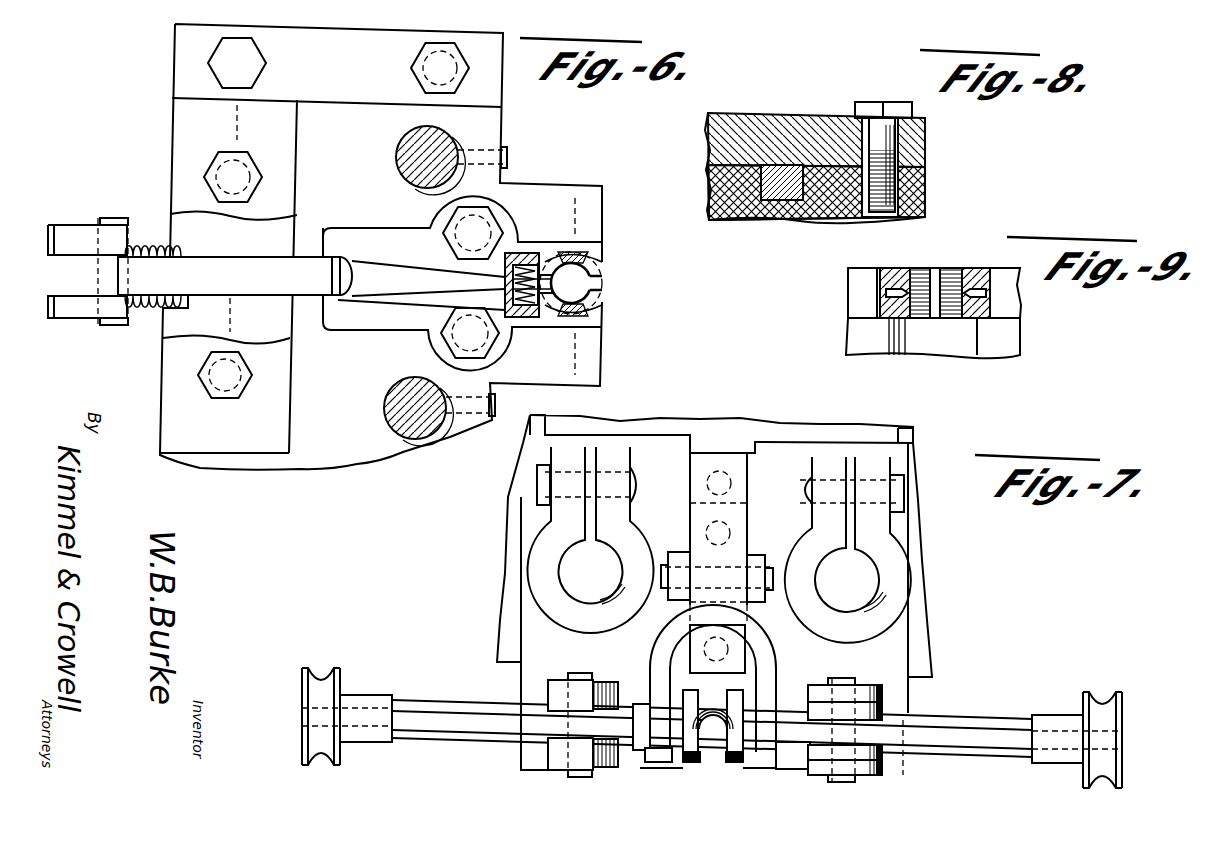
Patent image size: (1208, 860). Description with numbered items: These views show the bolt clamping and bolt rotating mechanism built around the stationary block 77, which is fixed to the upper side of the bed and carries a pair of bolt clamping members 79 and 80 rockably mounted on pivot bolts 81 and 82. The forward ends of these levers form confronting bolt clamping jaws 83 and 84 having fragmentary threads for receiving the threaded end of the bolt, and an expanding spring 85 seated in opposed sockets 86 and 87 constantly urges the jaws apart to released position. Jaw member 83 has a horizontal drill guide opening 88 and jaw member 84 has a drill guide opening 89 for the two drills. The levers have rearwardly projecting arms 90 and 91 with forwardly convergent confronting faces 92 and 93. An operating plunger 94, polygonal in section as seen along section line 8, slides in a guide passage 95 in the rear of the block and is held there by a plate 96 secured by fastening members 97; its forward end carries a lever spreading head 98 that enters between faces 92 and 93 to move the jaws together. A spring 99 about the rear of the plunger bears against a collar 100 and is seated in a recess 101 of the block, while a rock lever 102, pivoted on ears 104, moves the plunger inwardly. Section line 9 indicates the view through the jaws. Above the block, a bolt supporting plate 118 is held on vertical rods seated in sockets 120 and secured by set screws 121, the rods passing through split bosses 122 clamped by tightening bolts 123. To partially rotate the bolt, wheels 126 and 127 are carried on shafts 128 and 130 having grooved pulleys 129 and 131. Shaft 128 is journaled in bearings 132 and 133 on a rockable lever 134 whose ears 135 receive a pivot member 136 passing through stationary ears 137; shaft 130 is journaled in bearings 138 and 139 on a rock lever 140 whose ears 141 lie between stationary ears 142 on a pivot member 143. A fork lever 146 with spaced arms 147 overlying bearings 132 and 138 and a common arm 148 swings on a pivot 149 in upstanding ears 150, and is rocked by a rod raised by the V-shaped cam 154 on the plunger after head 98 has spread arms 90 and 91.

In FIG. 6, the section line 8— 8 is at (246, 218).
In FIG. 6, the section line 9— 9 is at (608, 286).
In FIG. 6, the stationary block 77 is at (551, 194).
In FIG. 6, the bolt clamping member 79 is at (499, 229).
In FIG. 6, the bolt clamping member 80 is at (557, 356).
In FIG. 6, the pivot bolt 81 is at (507, 190).
In FIG. 6, the pivot bolt 82 is at (411, 361).
In FIG. 6, the bolt clamping jaw 83 is at (602, 281).
In FIG. 9, the bolt clamping jaw 83 is at (985, 242).
In FIG. 6, the bolt clamping jaw 84 is at (607, 291).
In FIG. 9, the bolt clamping jaw 84 is at (910, 247).
In FIG. 6, the expanding spring 85 is at (421, 282).
In FIG. 6, the socket 86 is at (535, 269).
In FIG. 6, the socket 87 is at (541, 315).
In FIG. 9, the drill guide opening 88 is at (965, 329).
In FIG. 9, the drill guide opening 89 is at (884, 327).
In FIG. 6, the rearwardly projecting arm 90 is at (462, 246).
In FIG. 6, the rearwardly projecting arm 91 is at (462, 299).
In FIG. 6, the convergent face 92 is at (409, 252).
In FIG. 6, the convergent face 93 is at (451, 330).
In FIG. 6, the operating plunger 94 is at (381, 247).
In FIG. 8, the operating plunger 94 is at (786, 215).
In FIG. 8, the guide passage 95 is at (816, 219).
In FIG. 8, the plate 96 is at (815, 146).
In FIG. 8, the fastening member 97 is at (876, 139).
In FIG. 6, the lever spreading head 98 is at (330, 332).
In FIG. 6, the spring 99 is at (149, 208).
In FIG. 6, the collar 100 is at (128, 341).
In FIG. 6, the recess 101 is at (153, 359).
In FIG. 6, the rock lever 102 is at (88, 230).
In FIG. 6, the ears 104 is at (87, 326).
In FIG. 7, the bolt supporting plate 118 is at (667, 595).
In FIG. 6, the socket 120 is at (402, 154).
In FIG. 6, the set screw 121 is at (499, 276).
In FIG. 7, the split boss 122 is at (591, 556).
In FIG. 7, the tightening bolt 123 is at (534, 490).
In FIG. 7, the wheel 126 is at (682, 750).
In FIG. 7, the wheel 127 is at (824, 578).
In FIG. 7, the shaft 128 is at (546, 745).
In FIG. 7, the grooved pulley 129 is at (347, 695).
In FIG. 7, the shaft 130 is at (866, 718).
In FIG. 7, the grooved pulley 131 is at (1087, 717).
In FIG. 7, the bearing 132 is at (619, 698).
In FIG. 7, the bearing 133 is at (381, 698).
In FIG. 7, the rockable lever 134 is at (406, 764).
In FIG. 7, the ears 135 is at (537, 691).
In FIG. 7, the pivot member 136 is at (579, 776).
In FIG. 7, the stationary ears 137 is at (515, 785).
In FIG. 7, the bearing 138 is at (727, 776).
In FIG. 7, the bearing 139 is at (1057, 712).
In FIG. 7, the rock lever 140 is at (995, 770).
In FIG. 7, the ears 141 is at (893, 693).
In FIG. 7, the stationary ears 142 is at (863, 778).
In FIG. 7, the pivot member 143 is at (838, 800).
In FIG. 7, the fork lever 146 is at (669, 554).
In FIG. 7, the arm 147 is at (721, 686).
In FIG. 7, the common arm 148 is at (731, 563).
In FIG. 7, the pivot 149 is at (820, 577).
In FIG. 7, the upstanding ears 150 is at (770, 560).
In FIG. 6, the cam 154 is at (235, 276).